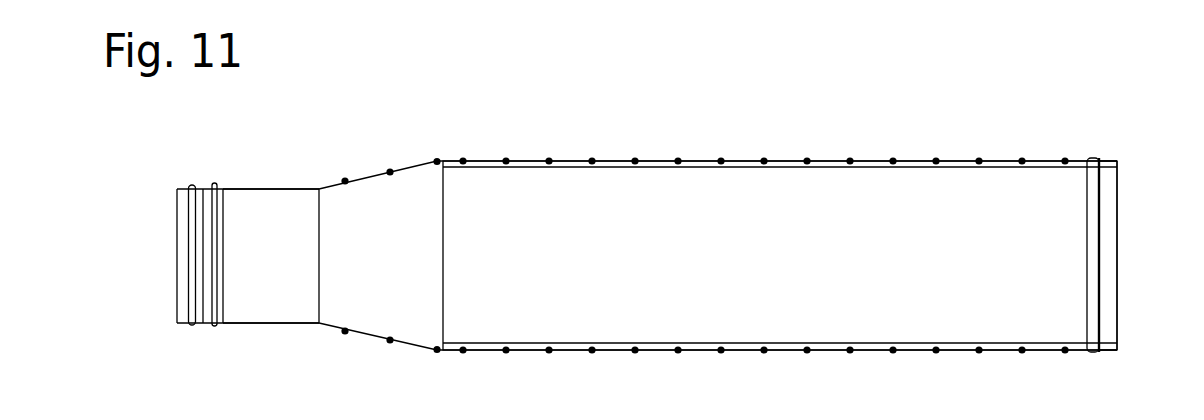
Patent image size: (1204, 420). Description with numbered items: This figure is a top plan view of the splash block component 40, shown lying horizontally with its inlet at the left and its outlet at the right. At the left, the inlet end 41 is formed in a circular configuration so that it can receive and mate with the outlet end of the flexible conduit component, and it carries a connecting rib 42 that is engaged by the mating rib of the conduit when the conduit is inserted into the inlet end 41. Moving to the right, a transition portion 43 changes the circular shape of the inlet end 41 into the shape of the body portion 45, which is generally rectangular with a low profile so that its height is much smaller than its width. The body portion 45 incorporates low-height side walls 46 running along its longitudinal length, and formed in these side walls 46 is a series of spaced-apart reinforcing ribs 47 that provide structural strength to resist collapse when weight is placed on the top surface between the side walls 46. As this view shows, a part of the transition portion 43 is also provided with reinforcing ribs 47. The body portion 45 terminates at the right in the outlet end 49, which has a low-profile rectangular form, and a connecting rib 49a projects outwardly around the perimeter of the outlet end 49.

The splash block component 40 is at (363, 102).
The inlet end 41 is at (182, 318).
The connecting rib 42 is at (199, 186).
The transition portion 43 is at (263, 287).
The body portion 45 is at (615, 208).
The side walls 46 is at (966, 160).
The reinforcing ribs 47 is at (592, 160).
The outlet end 49 is at (1113, 305).
The connecting rib 49a is at (1093, 158).